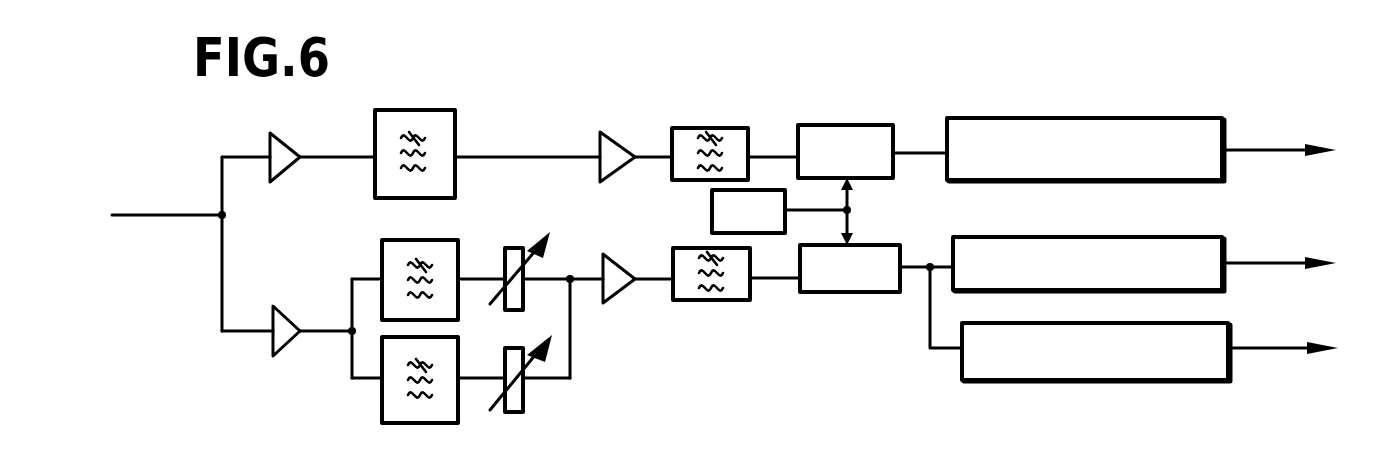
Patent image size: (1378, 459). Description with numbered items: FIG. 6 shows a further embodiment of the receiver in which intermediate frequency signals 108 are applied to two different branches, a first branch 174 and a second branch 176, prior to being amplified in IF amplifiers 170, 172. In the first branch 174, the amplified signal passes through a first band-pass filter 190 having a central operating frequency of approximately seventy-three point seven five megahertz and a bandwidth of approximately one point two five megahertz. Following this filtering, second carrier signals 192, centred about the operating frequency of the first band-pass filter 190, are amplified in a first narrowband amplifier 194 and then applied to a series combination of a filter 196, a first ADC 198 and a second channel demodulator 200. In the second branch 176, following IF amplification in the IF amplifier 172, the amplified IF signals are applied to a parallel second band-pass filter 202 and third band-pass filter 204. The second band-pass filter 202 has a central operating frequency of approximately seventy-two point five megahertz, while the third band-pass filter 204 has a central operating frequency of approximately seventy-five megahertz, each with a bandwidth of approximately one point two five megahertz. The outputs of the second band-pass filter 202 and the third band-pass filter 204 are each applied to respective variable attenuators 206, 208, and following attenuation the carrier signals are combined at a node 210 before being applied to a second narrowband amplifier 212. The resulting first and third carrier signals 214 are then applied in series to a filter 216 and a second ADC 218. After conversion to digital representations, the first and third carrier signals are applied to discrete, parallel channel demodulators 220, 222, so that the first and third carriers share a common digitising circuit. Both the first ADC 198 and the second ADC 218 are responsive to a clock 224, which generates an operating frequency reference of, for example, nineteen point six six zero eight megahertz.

The intermediate frequency signals 108 is at (182, 213).
The IF amplifier 170 is at (278, 163).
The IF amplifier 172 is at (277, 340).
The first branch 174 is at (343, 159).
The second branch 176 is at (322, 335).
The first band-pass filter 190 is at (437, 118).
The second carrier signals 192 is at (503, 155).
The first narrowband amplifier 194 is at (613, 133).
The filter 196 is at (733, 130).
The first ADC 198 is at (857, 130).
The second channel demodulator 200 is at (1039, 128).
The second band-pass filter 202 is at (453, 243).
The third band-pass filter 204 is at (382, 420).
The variable attenuator 206 is at (517, 247).
The variable attenuator 208 is at (518, 412).
The node 210 is at (575, 283).
The second narrowband amplifier 212 is at (615, 282).
The first and third carrier signals 214 is at (653, 277).
The filter 216 is at (707, 302).
The second ADC 218 is at (812, 282).
The channel demodulator 220 is at (1007, 237).
The channel demodulator 222 is at (1007, 372).
The clock 224 is at (712, 212).